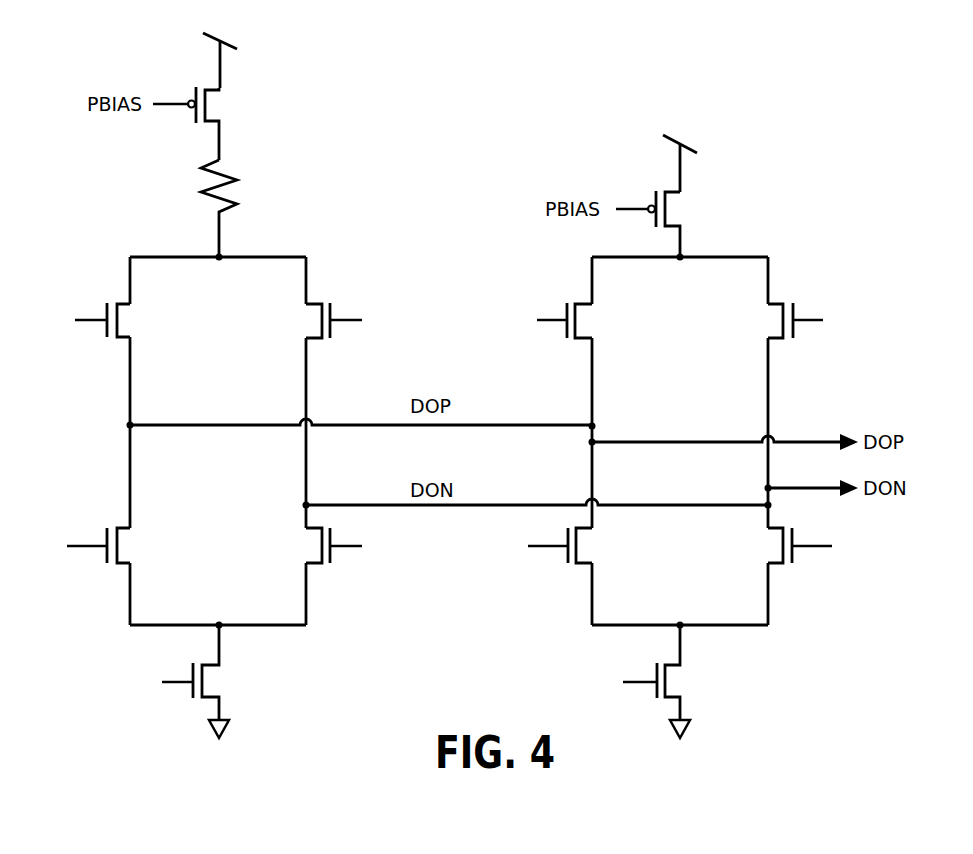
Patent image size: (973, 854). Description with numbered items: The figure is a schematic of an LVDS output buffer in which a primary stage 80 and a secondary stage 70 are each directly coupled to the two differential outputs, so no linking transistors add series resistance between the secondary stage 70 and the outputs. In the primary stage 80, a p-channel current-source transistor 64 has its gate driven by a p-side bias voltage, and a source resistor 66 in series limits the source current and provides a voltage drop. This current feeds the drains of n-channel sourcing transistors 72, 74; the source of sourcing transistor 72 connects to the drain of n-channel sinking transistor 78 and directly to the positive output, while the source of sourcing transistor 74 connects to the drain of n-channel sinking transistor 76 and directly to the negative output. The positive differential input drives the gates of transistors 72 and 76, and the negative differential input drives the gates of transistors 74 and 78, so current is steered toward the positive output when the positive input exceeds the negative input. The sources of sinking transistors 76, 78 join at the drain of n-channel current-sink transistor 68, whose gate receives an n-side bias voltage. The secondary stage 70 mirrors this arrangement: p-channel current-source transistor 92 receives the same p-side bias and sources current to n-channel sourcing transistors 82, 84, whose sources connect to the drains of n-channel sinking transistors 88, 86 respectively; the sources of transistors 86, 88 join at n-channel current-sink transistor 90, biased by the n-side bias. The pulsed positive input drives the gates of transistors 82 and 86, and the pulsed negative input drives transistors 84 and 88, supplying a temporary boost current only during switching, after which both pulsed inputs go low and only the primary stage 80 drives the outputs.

The p-channel current-source transistor 64 is at (212, 103).
The source resistor 66 is at (236, 176).
The n-channel current-sink transistor 68 is at (208, 680).
The secondary stage 70 is at (695, 317).
The n-channel sourcing transistor 72 is at (122, 318).
The n-channel sourcing transistor 74 is at (308, 315).
The n-channel sinking transistor 76 is at (308, 540).
The n-channel sinking transistor 78 is at (122, 543).
The primary stage 80 is at (234, 316).
The n-channel sourcing transistor 82 is at (581, 318).
The n-channel sourcing transistor 84 is at (770, 315).
The n-channel sinking transistor 86 is at (770, 540).
The n-channel sinking transistor 88 is at (581, 543).
The n-channel current-sink transistor 90 is at (671, 680).
The p-channel current-source transistor 92 is at (672, 207).